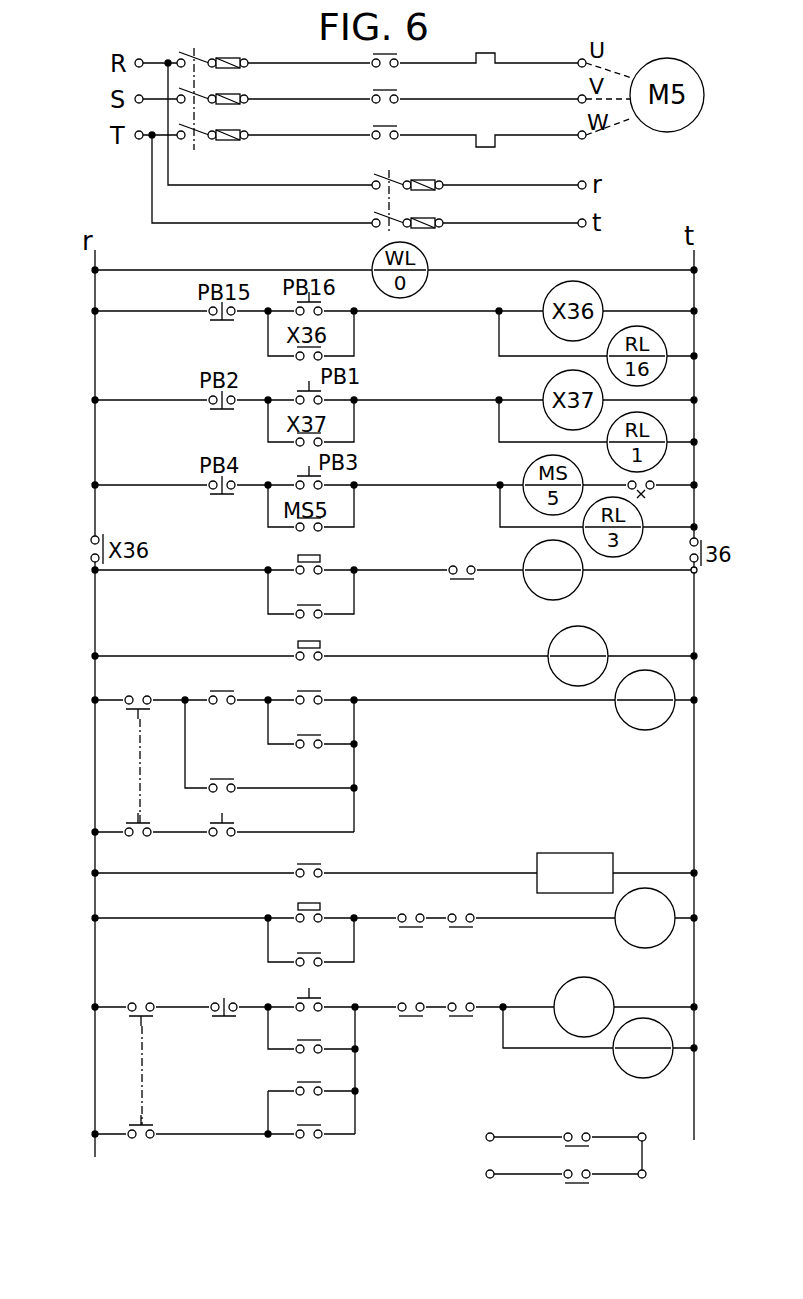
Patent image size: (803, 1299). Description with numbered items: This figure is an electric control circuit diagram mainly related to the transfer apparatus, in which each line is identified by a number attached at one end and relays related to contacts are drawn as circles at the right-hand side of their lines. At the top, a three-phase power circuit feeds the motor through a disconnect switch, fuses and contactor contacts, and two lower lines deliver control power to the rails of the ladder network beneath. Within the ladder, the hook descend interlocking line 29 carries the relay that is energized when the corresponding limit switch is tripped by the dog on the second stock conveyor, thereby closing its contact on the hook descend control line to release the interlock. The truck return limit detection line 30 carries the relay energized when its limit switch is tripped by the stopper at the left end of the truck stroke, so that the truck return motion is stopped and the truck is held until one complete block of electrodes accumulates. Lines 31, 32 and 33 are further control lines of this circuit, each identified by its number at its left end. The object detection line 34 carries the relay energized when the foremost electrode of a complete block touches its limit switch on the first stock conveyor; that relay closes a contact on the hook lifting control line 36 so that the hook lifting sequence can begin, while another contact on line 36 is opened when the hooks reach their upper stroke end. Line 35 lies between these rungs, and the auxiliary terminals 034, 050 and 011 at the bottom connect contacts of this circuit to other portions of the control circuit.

The hook descend interlocking line 29 is at (367, 577).
The truck return limit detection line 30 is at (367, 653).
The control circuit line 31 is at (367, 749).
The control circuit line 32 is at (196, 783).
The control circuit line 33 is at (367, 866).
The object detection line 34 is at (367, 925).
The control circuit line 35 is at (367, 1053).
The hook lifting control line 36 is at (196, 1087).
The terminal 034 is at (539, 1128).
The terminal 050 is at (539, 1165).
The terminal 011 is at (667, 1155).